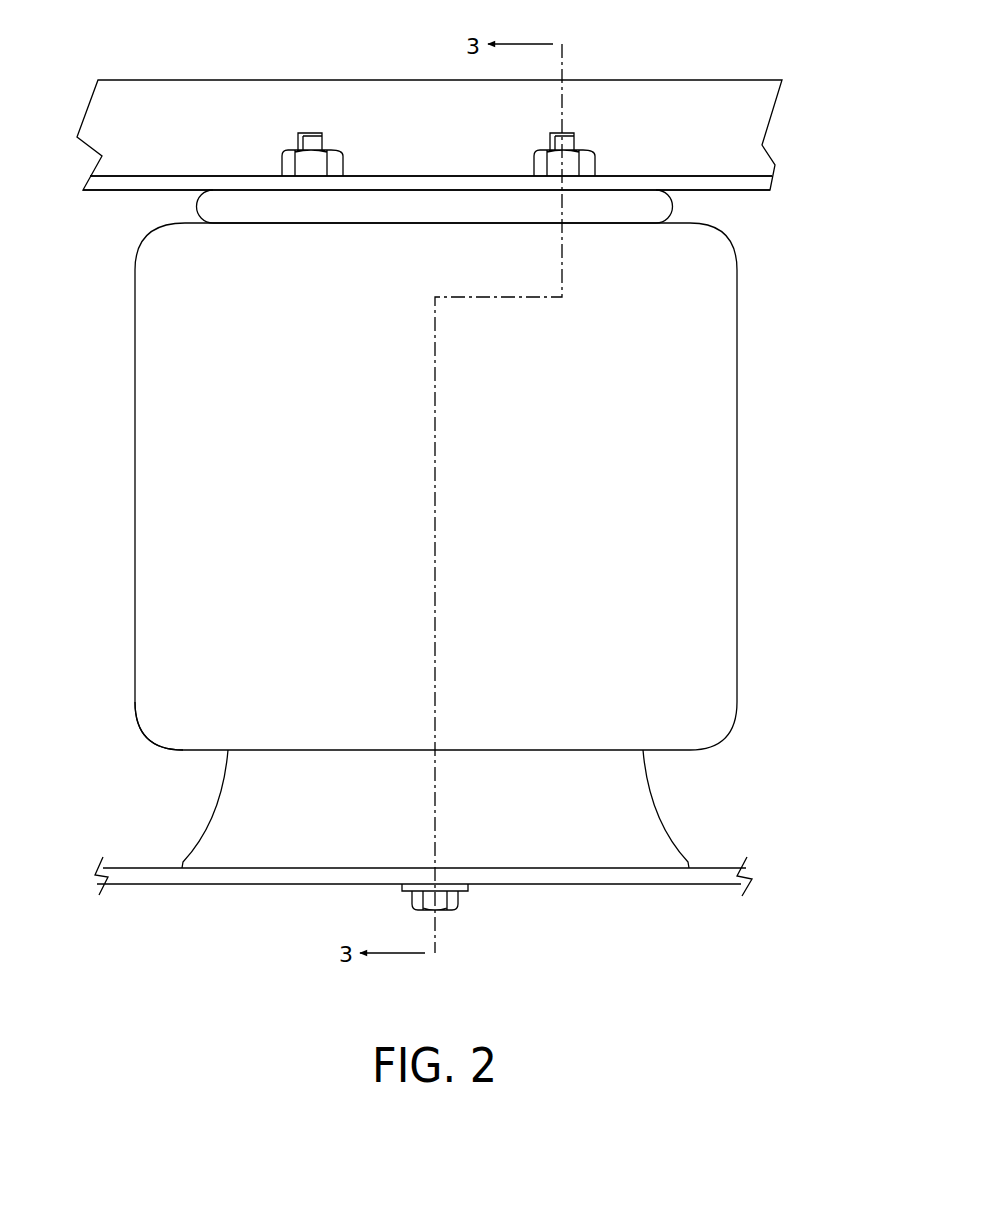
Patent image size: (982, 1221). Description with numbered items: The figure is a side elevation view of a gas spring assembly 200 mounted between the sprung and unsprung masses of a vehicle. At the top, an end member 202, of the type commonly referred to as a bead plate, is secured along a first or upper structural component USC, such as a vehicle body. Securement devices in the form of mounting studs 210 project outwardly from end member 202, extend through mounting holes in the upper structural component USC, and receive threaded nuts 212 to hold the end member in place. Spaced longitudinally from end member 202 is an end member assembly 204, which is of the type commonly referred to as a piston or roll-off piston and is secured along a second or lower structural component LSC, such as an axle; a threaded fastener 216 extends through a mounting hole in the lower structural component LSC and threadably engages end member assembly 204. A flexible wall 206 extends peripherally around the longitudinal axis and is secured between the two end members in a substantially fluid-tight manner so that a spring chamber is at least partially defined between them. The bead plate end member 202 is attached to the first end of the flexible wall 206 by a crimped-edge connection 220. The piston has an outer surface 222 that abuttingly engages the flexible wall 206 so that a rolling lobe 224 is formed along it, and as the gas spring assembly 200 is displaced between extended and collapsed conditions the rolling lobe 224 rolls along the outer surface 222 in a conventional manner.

The gas spring assembly 200 is at (757, 323).
The end member 202 is at (642, 200).
The end member assembly 204 is at (445, 801).
The flexible wall 206 is at (738, 480).
The mounting studs 210 is at (300, 137).
The threaded nuts 212 is at (338, 163).
The threaded fastener 216 is at (455, 898).
The crimped-edge connection 220 is at (673, 210).
The outer surface 222 is at (212, 815).
The rolling lobe 224 is at (158, 748).
The upper structural component USC is at (182, 92).
The lower structural component LSC is at (155, 877).